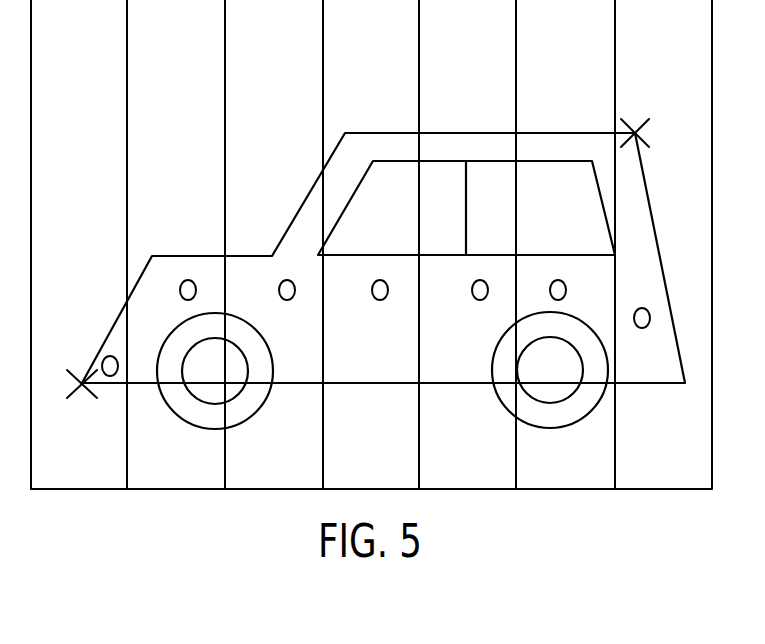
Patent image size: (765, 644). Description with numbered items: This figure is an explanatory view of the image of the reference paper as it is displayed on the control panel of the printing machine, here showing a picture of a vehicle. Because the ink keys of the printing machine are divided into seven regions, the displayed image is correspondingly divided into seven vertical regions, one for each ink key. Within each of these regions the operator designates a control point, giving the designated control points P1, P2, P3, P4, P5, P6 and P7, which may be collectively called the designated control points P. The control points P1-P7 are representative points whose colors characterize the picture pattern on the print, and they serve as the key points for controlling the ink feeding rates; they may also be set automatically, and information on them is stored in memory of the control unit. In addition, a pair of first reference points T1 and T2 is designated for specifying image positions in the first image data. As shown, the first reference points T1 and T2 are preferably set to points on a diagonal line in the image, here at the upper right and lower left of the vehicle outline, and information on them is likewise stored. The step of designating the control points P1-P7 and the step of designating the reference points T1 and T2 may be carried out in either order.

The designated control point P1 is at (110, 356).
The designated control point P2 is at (188, 280).
The designated control point P3 is at (287, 280).
The designated control point P4 is at (380, 280).
The designated control point P5 is at (480, 280).
The designated control point P6 is at (558, 280).
The designated control point P7 is at (642, 308).
The first reference point T1 is at (637, 130).
The first reference point T2 is at (80, 386).